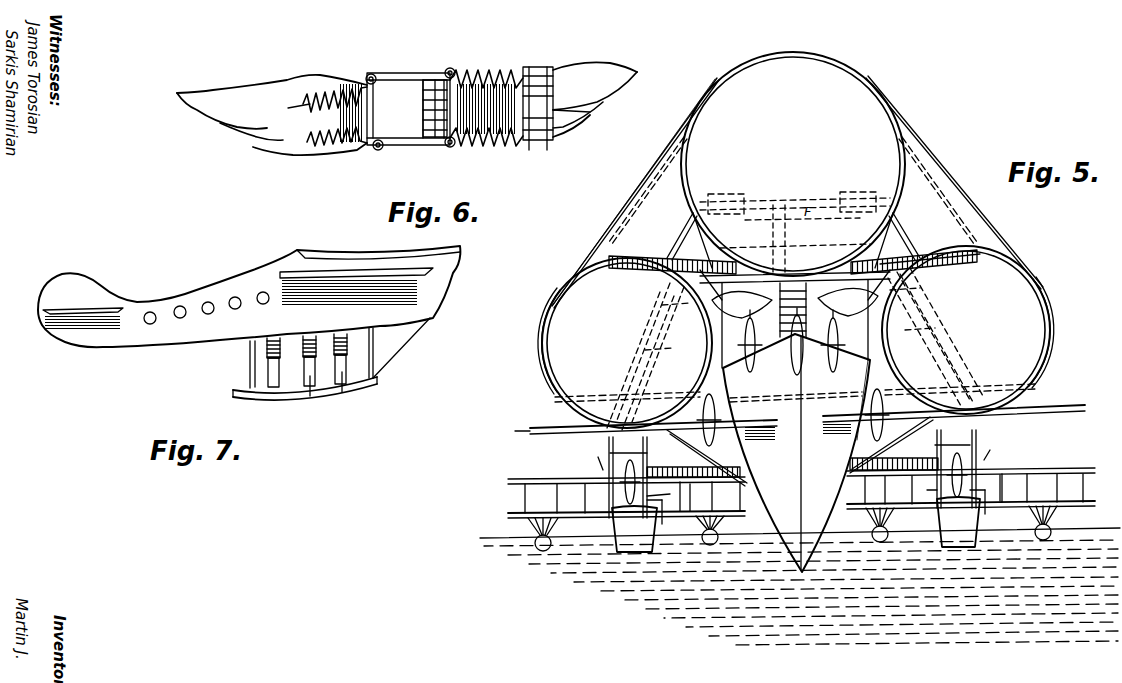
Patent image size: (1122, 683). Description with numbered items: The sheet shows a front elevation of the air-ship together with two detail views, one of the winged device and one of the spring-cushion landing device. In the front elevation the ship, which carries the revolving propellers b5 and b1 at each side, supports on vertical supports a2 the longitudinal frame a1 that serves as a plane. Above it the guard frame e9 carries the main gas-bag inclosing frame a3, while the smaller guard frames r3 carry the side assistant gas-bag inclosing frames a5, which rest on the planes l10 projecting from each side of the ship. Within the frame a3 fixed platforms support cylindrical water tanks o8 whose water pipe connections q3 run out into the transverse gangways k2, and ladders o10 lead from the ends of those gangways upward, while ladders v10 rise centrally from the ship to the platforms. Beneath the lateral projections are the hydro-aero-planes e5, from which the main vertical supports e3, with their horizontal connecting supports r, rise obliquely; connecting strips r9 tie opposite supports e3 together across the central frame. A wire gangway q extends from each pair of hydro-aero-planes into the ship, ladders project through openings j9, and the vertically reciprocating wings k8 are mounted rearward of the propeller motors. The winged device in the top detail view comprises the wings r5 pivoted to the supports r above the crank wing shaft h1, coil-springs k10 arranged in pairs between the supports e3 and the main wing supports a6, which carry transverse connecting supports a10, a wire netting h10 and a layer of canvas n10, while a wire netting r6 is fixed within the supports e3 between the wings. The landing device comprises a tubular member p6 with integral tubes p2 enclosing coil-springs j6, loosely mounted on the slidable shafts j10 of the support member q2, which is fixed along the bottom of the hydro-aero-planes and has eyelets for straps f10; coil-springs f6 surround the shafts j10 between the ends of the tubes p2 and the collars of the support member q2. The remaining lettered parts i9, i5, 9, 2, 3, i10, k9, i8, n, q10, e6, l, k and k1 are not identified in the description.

In FIG. 5, the main gas-bag inclosing frame a3 is at (793, 164).
In FIG. 5, the side assistant gas-bag inclosing frames a5 is at (796, 337).
In FIG. 5, the cylindrical water tanks o8 is at (795, 201).
In FIG. 5, the connecting strips r9 is at (802, 226).
In FIG. 5, the main gas-balloon inclosing frame supporting guard frame e9 is at (795, 233).
In FIG. 5, the ladders v10 is at (786, 260).
In FIG. 5, the suspension cable i9 is at (628, 236).
In FIG. 5, the suspension cable i5 is at (642, 200).
In FIG. 5, the suspension cable 9 is at (1028, 277).
In FIG. 5, the ladders o10 is at (688, 128).
In FIG. 5, the horizontal truss 2 is at (655, 258).
In FIG. 5, the brace strut 3 is at (689, 235).
In FIG. 5, the water pipe connections q3 is at (906, 222).
In FIG. 5, the transverse gang ways k2 is at (940, 256).
In FIG. 5, the frame a1 is at (742, 300).
In FIG. 5, the main vertical supports e3 is at (596, 474).
In FIG. 6, the main vertical supports e3 is at (371, 74).
In FIG. 5, the vertically reciprocating wings k8 is at (747, 341).
In FIG. 5, the vertical supports a2 is at (839, 341).
In FIG. 5, the openings j9 is at (804, 346).
In FIG. 5, the revolving propeller b5 is at (796, 453).
In FIG. 5, the revolving propeller b1 is at (855, 400).
In FIG. 5, the planes l10 is at (1080, 410).
In FIG. 5, the plane brace i10 is at (510, 425).
In FIG. 5, the smaller gas balloon inclosing frame supporting guard frames r3 is at (558, 400).
In FIG. 5, the connecting supports r is at (985, 440).
In FIG. 6, the connecting supports r is at (410, 73).
In FIG. 5, the propeller k9 is at (793, 421).
In FIG. 5, the diagonal brace i8 is at (694, 452).
In FIG. 5, the propeller n is at (792, 474).
In FIG. 5, the hydro-aero-planes e5 is at (801, 483).
In FIG. 7, the hydro-aero-planes e5 is at (150, 347).
In FIG. 5, the transverse wire gang-way q is at (693, 480).
In FIG. 5, the strut q10 is at (622, 500).
In FIG. 5, the float e6 is at (798, 521).
In FIG. 5, the float bracket l is at (828, 518).
In FIG. 5, the wheel k is at (1065, 518).
In FIG. 6, the wheel k is at (292, 108).
In FIG. 5, the wheel k1 is at (795, 526).
In FIG. 6, the vertically reciprocating wings r5 is at (228, 103).
In FIG. 6, the coil-springs k10 is at (342, 80).
In FIG. 6, the wire netting r6 is at (430, 75).
In FIG. 6, the crank wing shaft h1 is at (423, 115).
In FIG. 6, the wire netting h10 is at (538, 68).
In FIG. 6, the connecting supports a10 is at (529, 140).
In FIG. 6, the main wing-supports a6 is at (548, 140).
In FIG. 6, the layer of canvas n10 is at (590, 112).
In FIG. 7, the support member q2 is at (250, 342).
In FIG. 7, the slidable shafts j10 is at (268, 372).
In FIG. 7, the coil-springs j6 is at (274, 392).
In FIG. 7, the integral tubes p2 is at (329, 377).
In FIG. 7, the tubular member p6 is at (233, 392).
In FIG. 7, the coil-springs f6 is at (362, 353).
In FIG. 7, the straps f10 is at (378, 342).